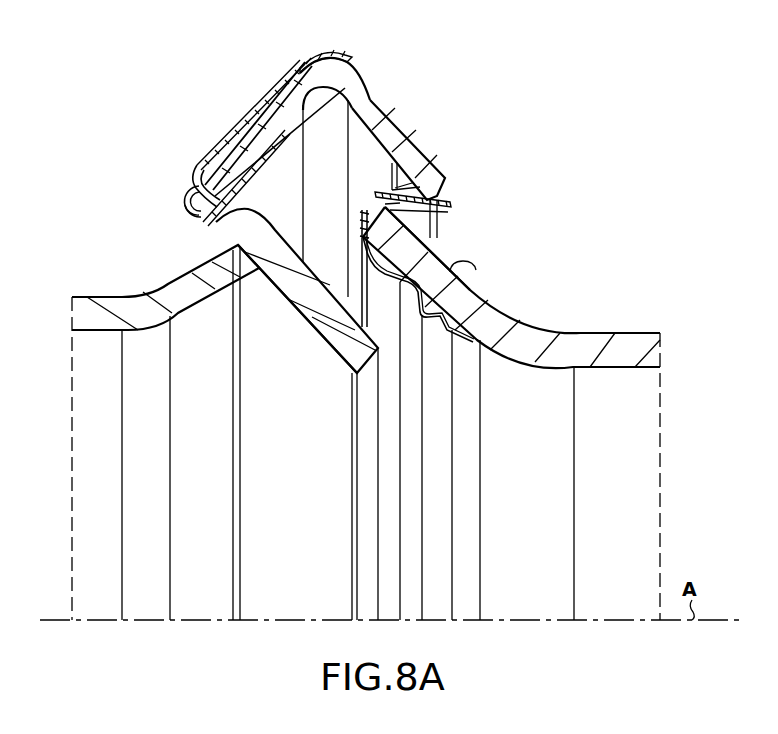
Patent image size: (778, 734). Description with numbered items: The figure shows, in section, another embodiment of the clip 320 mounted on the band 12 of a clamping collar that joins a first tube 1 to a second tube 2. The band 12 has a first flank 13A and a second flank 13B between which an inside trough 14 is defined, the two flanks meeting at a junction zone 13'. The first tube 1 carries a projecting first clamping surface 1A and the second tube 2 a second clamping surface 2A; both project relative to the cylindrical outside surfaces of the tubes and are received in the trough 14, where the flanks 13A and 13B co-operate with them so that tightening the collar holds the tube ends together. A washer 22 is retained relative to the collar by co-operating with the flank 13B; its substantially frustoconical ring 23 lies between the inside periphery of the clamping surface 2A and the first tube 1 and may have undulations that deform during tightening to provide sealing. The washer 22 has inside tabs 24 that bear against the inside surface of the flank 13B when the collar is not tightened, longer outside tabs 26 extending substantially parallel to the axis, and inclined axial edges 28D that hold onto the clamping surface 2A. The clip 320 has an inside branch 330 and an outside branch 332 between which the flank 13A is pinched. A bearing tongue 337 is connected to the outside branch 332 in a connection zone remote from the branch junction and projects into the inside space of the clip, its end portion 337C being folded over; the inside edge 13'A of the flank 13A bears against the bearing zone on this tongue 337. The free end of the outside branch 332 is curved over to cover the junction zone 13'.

The first tube 1 is at (80, 290).
The first clamping surface 1A is at (203, 263).
The second tube 2 is at (598, 312).
The second clamping surface 2A is at (458, 283).
The band 12 is at (313, 58).
The junction zone 13' is at (287, 106).
The first flank 13A is at (250, 120).
The second flank 13B is at (393, 118).
The inside trough 14 is at (345, 95).
The washer 22 is at (356, 217).
The frustoconical ring 23 is at (407, 283).
The inside tabs 24 is at (400, 188).
The outside tabs of a first type 26 is at (476, 266).
The inclined axial edges 28D is at (430, 207).
The clip 320 is at (203, 118).
The inside branch 330 is at (252, 186).
The outside branch 332 is at (298, 75).
The bearing tongue 337 is at (196, 158).
The end portion 337C is at (192, 190).
The inside edge 13'A is at (152, 219).